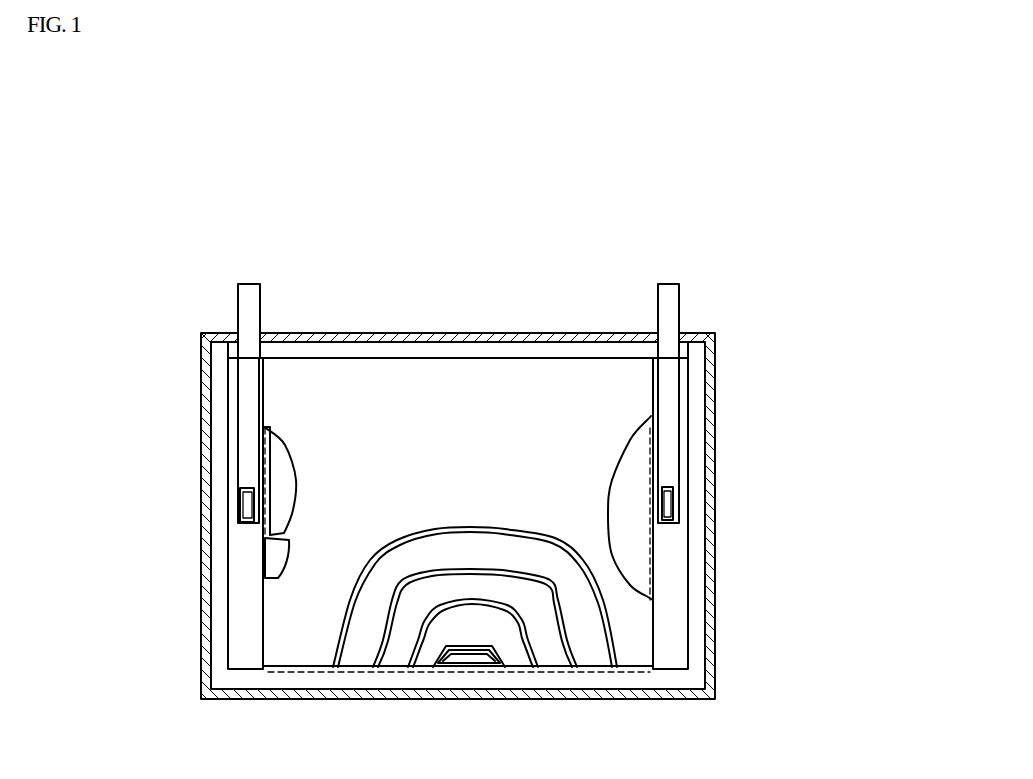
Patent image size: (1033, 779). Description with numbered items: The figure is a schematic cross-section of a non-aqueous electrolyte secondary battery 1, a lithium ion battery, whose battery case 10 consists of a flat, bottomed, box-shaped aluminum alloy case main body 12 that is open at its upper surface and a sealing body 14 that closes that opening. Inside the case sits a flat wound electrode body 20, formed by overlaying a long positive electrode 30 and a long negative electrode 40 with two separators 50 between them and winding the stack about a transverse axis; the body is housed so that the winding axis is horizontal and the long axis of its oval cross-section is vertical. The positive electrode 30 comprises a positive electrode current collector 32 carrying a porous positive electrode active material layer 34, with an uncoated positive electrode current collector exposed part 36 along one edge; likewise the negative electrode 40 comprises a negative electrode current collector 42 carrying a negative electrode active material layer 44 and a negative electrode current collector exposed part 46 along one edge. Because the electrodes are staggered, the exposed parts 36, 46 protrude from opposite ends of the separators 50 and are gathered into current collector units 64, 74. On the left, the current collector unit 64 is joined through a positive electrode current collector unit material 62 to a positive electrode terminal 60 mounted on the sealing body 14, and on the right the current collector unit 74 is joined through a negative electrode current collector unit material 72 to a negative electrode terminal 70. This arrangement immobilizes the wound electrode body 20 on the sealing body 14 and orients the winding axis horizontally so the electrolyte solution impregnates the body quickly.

The non-aqueous electrolyte secondary battery 1 is at (468, 465).
The battery case 10 is at (499, 484).
The case main body 12 is at (715, 521).
The sealing body 14 is at (571, 334).
The wound electrode body 20 is at (447, 522).
The positive electrode 30 is at (425, 652).
The positive electrode current collector 32 is at (243, 648).
The positive electrode active material layer 34 is at (290, 478).
The positive electrode current collector exposed part 36 is at (180, 521).
The negative electrode 40 is at (263, 572).
The negative electrode current collector 42 is at (672, 647).
The negative electrode active material layer 44 is at (283, 555).
The negative electrode current collector exposed part 46 is at (745, 513).
The separator 50 is at (263, 540).
The positive electrode terminal 60 is at (249, 290).
The positive electrode current collector unit material 62 is at (248, 412).
The current collector unit 64 is at (247, 500).
The negative electrode terminal 70 is at (666, 290).
The negative electrode current collector unit material 72 is at (670, 406).
The current collector unit 74 is at (668, 498).